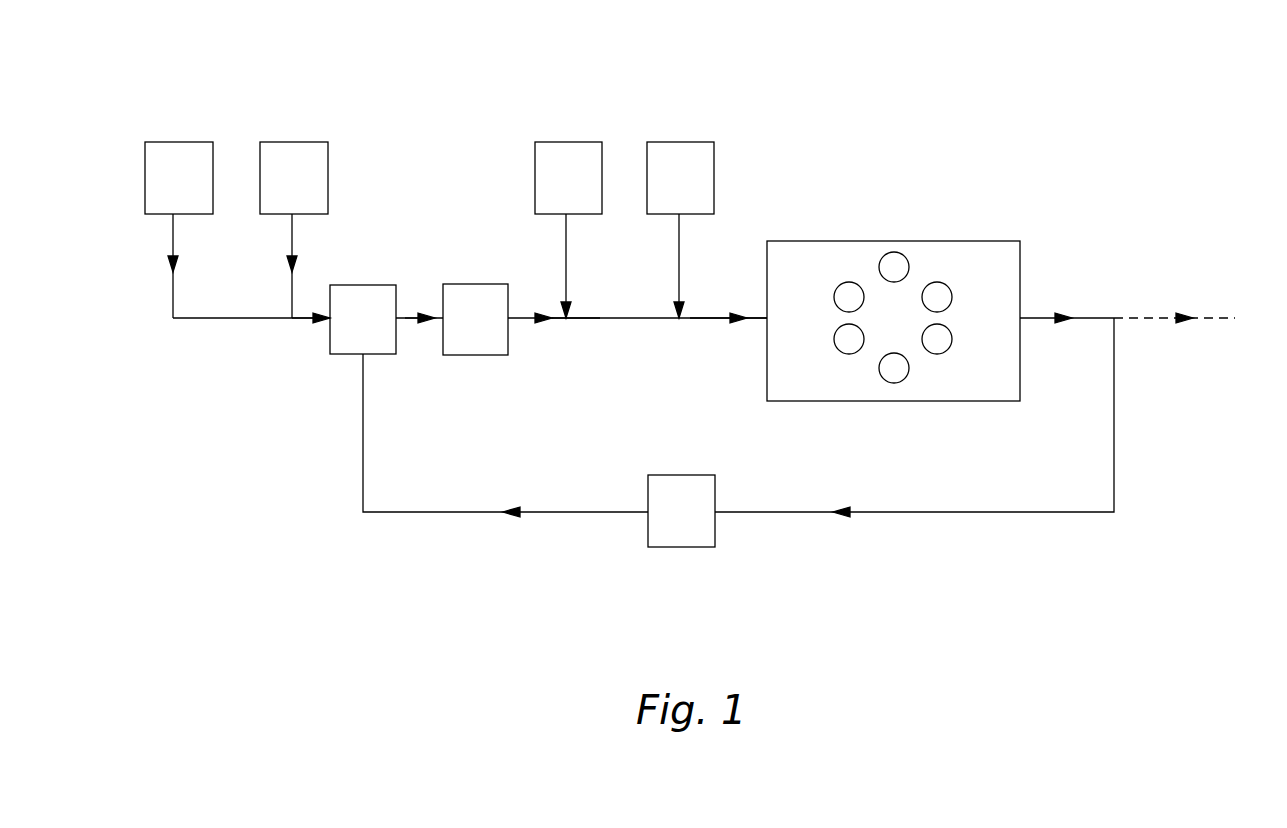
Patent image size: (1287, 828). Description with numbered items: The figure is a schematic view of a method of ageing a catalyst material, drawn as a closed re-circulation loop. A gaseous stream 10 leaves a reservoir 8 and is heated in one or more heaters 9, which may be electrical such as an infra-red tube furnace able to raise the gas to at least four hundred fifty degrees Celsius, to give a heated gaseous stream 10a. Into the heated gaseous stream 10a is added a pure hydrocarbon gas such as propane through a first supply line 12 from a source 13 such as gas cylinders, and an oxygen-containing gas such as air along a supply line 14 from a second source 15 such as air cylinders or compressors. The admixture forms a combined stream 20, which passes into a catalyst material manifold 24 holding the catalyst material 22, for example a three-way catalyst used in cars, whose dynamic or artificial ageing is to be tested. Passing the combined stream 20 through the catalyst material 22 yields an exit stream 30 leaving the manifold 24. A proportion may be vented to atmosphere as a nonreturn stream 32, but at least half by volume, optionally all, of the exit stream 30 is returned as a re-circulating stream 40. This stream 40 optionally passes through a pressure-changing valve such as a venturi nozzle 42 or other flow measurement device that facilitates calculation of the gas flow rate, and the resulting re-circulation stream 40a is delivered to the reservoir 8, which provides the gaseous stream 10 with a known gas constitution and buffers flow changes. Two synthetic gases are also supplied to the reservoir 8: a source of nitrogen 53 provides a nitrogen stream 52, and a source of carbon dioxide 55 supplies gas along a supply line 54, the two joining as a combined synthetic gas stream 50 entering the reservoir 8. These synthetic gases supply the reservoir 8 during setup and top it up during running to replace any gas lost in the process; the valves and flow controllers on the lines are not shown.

The reservoir 8 is at (373, 285).
The heater 9 is at (465, 284).
The gaseous stream 10 is at (435, 320).
The heated gaseous stream 10a is at (562, 320).
The first supply line 12 is at (566, 233).
The source 13 is at (566, 142).
The supply line 14 is at (680, 238).
The second source 15 is at (679, 142).
The combined stream 20 is at (710, 320).
The catalyst material 22 is at (904, 258).
The catalyst material manifold 24 is at (878, 240).
The exit stream 30 is at (1090, 317).
The nonreturn stream 32 is at (1140, 317).
The re-circulating stream 40 is at (947, 512).
The re-circulation stream 40a is at (613, 512).
The venturi nozzle 42 is at (681, 547).
The combined synthetic gas stream 50 is at (310, 320).
The nitrogen stream 52 is at (173, 238).
The source of nitrogen 53 is at (173, 142).
The supply line 54 is at (293, 243).
The source of carbon dioxide 55 is at (292, 142).